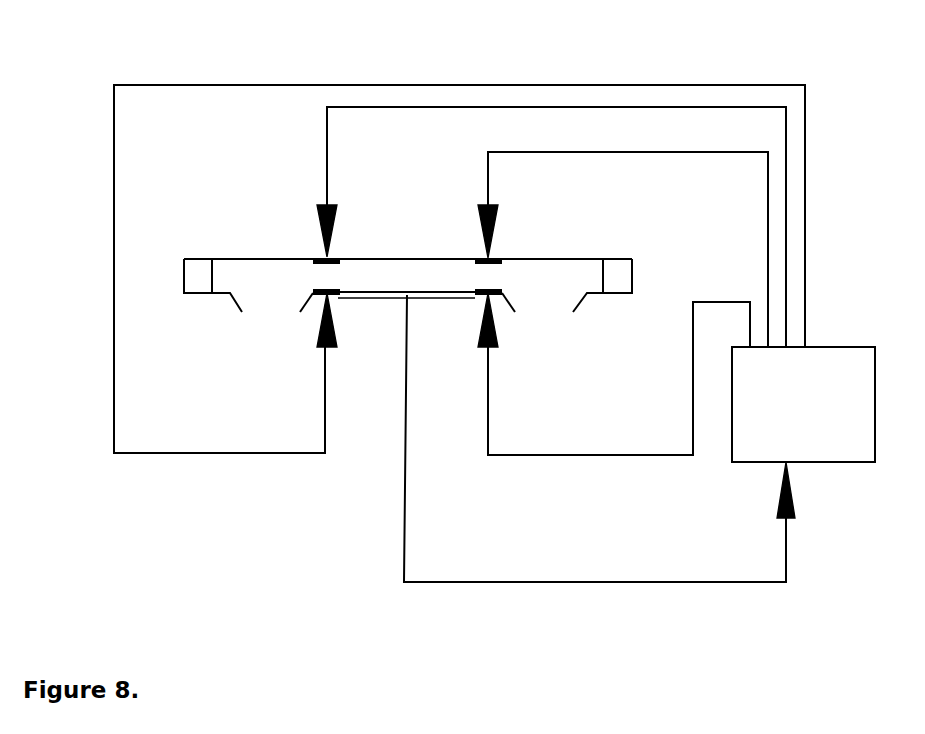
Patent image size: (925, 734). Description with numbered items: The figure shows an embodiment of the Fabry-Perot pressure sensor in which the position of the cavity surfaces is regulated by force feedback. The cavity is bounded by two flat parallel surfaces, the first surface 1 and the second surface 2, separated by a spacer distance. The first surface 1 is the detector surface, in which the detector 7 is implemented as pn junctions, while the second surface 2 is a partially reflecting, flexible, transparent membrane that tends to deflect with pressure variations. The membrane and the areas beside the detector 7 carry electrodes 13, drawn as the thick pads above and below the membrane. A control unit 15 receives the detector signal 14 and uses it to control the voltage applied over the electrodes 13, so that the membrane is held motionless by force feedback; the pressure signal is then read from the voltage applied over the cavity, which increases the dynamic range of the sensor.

The first surface 1 is at (420, 294).
The second surface 2 is at (408, 258).
The detector 7 is at (372, 299).
The electrodes 13 is at (315, 260).
The detector signal 14 is at (599, 468).
The control unit 15 is at (803, 404).